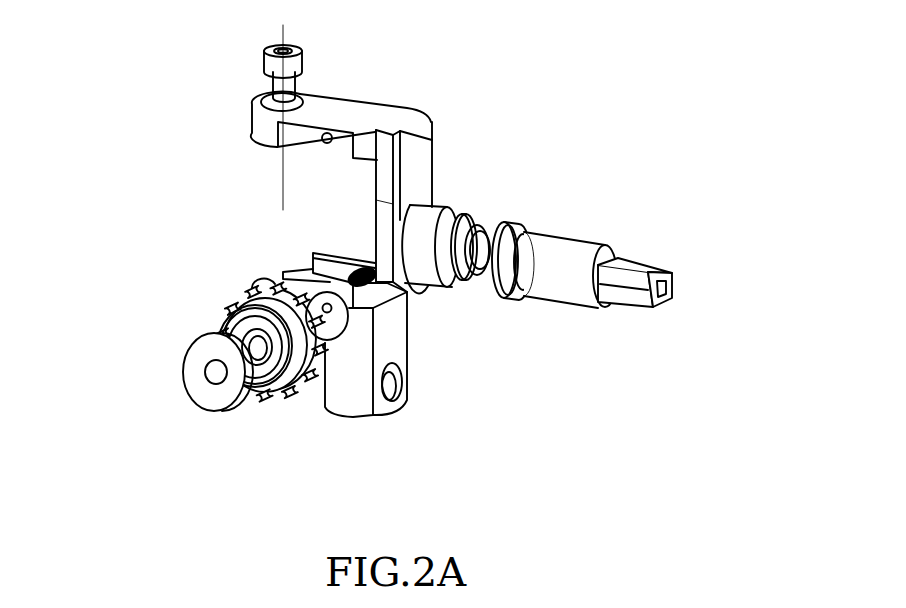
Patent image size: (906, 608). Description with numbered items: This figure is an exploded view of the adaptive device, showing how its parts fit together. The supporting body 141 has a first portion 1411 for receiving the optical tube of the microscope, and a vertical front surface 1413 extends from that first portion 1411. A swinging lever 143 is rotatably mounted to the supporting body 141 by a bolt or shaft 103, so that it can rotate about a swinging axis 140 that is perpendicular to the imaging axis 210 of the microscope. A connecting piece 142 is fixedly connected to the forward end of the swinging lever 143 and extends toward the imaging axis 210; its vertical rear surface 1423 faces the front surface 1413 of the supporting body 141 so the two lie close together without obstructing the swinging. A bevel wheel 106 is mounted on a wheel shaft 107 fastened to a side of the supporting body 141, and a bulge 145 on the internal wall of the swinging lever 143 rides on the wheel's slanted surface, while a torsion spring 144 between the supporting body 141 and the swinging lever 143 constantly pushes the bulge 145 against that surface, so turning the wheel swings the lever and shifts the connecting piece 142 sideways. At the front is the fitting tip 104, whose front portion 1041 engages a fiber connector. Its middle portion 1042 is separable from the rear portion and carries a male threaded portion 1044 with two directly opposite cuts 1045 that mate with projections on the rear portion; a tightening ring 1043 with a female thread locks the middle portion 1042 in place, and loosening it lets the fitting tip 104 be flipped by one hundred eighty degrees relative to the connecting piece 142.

The bolt or shaft 103 is at (292, 62).
The fitting tip 104 is at (605, 218).
The bevel wheel 106 is at (233, 305).
The wheel shaft 107 is at (215, 374).
The swinging axis 140 is at (332, 157).
The supporting body 141 is at (316, 403).
The connecting piece 142 is at (333, 157).
The swinging lever 143 is at (363, 110).
The torsion spring 144 is at (322, 250).
The bulge 145 is at (258, 148).
The imaging axis 210 is at (490, 402).
The front portion 1041 is at (640, 270).
The middle portion 1042 is at (565, 240).
The tightening ring 1043 is at (443, 210).
The male threaded portion 1044 is at (510, 293).
The cuts 1045 is at (614, 227).
The first portion 1411 is at (350, 403).
The front surface 1413 is at (400, 343).
The rear surface 1423 is at (375, 200).